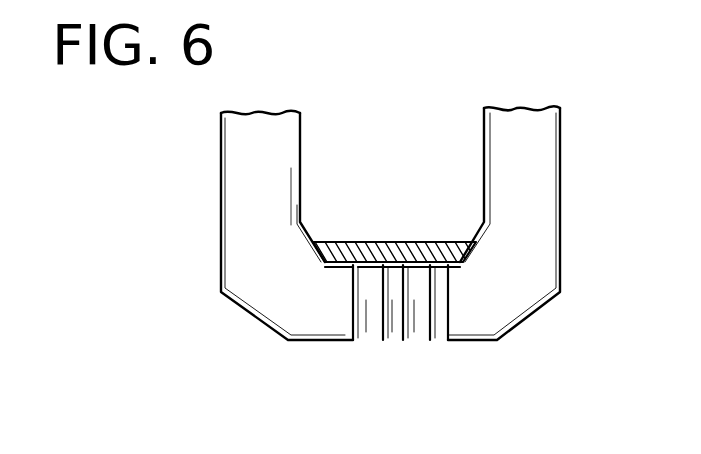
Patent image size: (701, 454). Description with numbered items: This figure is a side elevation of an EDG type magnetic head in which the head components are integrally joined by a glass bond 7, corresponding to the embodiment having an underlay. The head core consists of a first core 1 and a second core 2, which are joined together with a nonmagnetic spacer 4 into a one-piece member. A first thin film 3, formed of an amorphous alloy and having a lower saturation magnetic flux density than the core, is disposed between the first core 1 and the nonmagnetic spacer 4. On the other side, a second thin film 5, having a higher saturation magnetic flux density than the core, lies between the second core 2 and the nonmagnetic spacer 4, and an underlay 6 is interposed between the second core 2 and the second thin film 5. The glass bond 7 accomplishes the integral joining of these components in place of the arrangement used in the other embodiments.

The first core 1 is at (245, 187).
The second core 2 is at (532, 186).
The first thin film 3 is at (370, 340).
The nonmagnetic spacer 4 is at (395, 340).
The second thin film 5 is at (420, 340).
The underlay 6 is at (445, 340).
The glass bond 7 is at (395, 242).